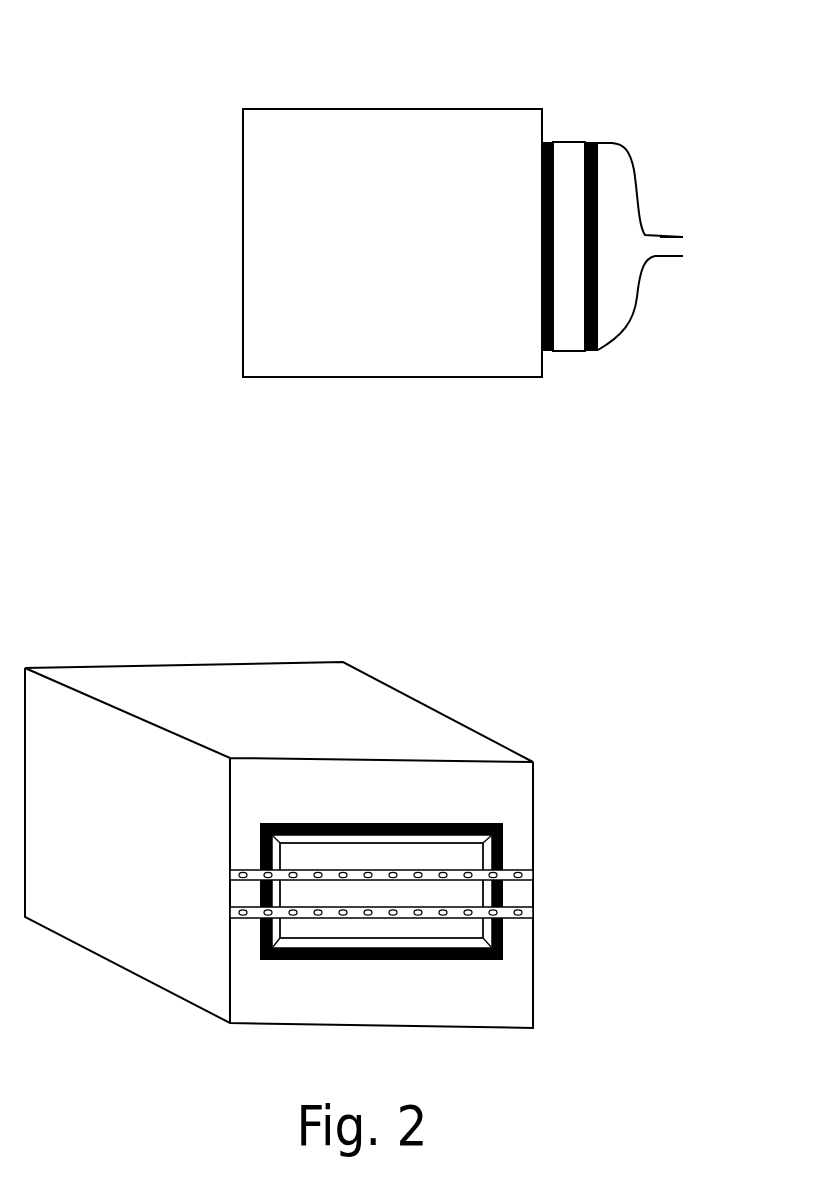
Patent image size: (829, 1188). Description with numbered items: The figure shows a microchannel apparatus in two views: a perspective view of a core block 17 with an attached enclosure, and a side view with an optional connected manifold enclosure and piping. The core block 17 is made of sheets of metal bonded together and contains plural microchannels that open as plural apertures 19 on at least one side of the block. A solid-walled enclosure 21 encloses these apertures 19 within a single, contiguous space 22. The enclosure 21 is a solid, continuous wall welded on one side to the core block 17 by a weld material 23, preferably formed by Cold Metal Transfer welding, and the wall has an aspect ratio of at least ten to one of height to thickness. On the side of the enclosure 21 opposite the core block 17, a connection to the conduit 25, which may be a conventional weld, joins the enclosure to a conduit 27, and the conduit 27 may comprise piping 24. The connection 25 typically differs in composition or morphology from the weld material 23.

The core block 17 is at (313, 142).
The apertures 19 is at (477, 872).
The solid-walled enclosure 21 is at (563, 153).
The contiguous space 22 is at (465, 897).
The weld material 23 is at (545, 357).
The piping 24 is at (662, 248).
The connection to the conduit 25 is at (588, 353).
The conduit 27 is at (605, 168).